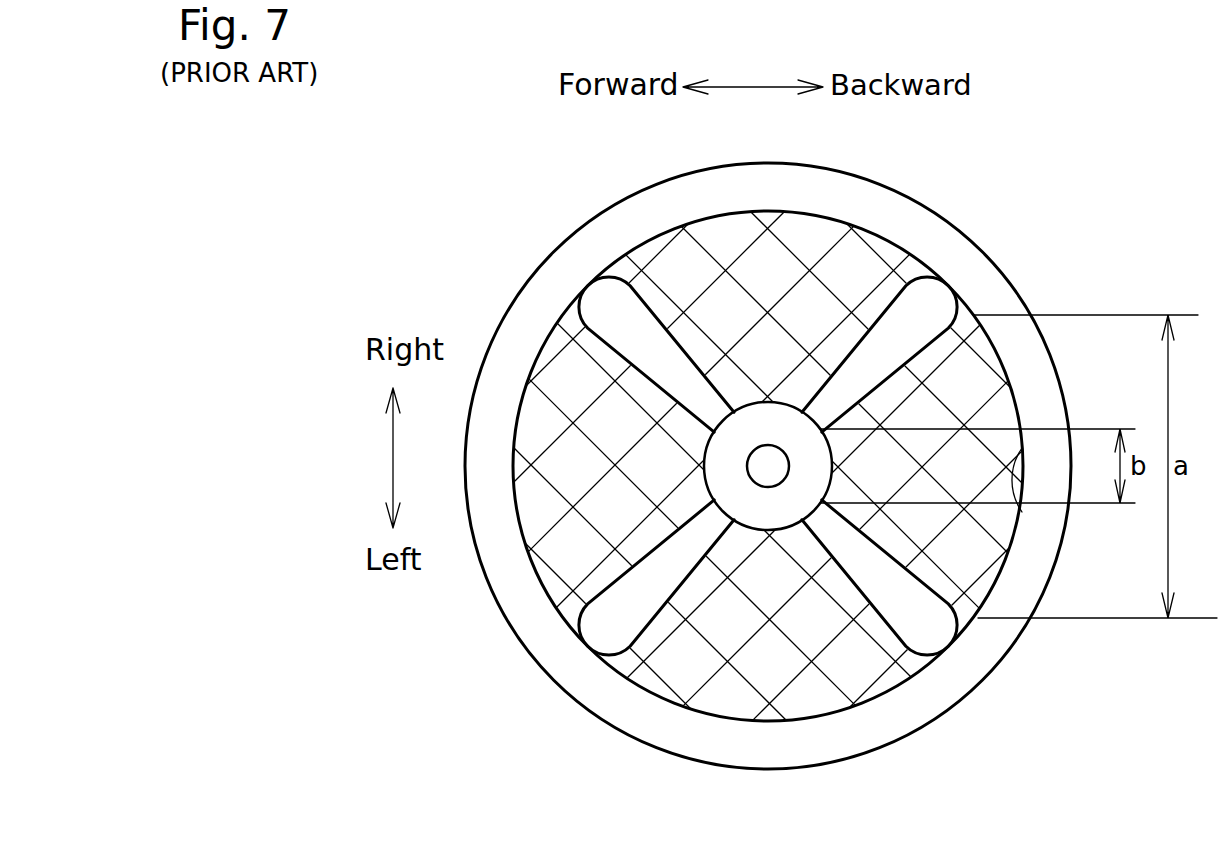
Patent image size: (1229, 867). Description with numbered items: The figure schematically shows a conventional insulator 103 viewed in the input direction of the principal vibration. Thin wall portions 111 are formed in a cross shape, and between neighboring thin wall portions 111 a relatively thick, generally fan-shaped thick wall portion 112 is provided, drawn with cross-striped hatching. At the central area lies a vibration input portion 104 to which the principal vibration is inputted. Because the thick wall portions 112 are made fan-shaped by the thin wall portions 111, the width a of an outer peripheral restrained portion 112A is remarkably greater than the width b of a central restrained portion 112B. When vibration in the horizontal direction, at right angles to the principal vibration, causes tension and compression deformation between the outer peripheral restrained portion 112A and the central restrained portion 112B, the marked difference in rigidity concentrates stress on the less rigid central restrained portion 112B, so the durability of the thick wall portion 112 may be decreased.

The insulator 103 is at (590, 189).
The vibration input portion 104 is at (768, 502).
The thin wall portions 111 is at (610, 320).
The thick wall portion 112 is at (787, 265).
The outer peripheral restrained portion 112A is at (1021, 493).
The central restrained portion 112B is at (836, 470).